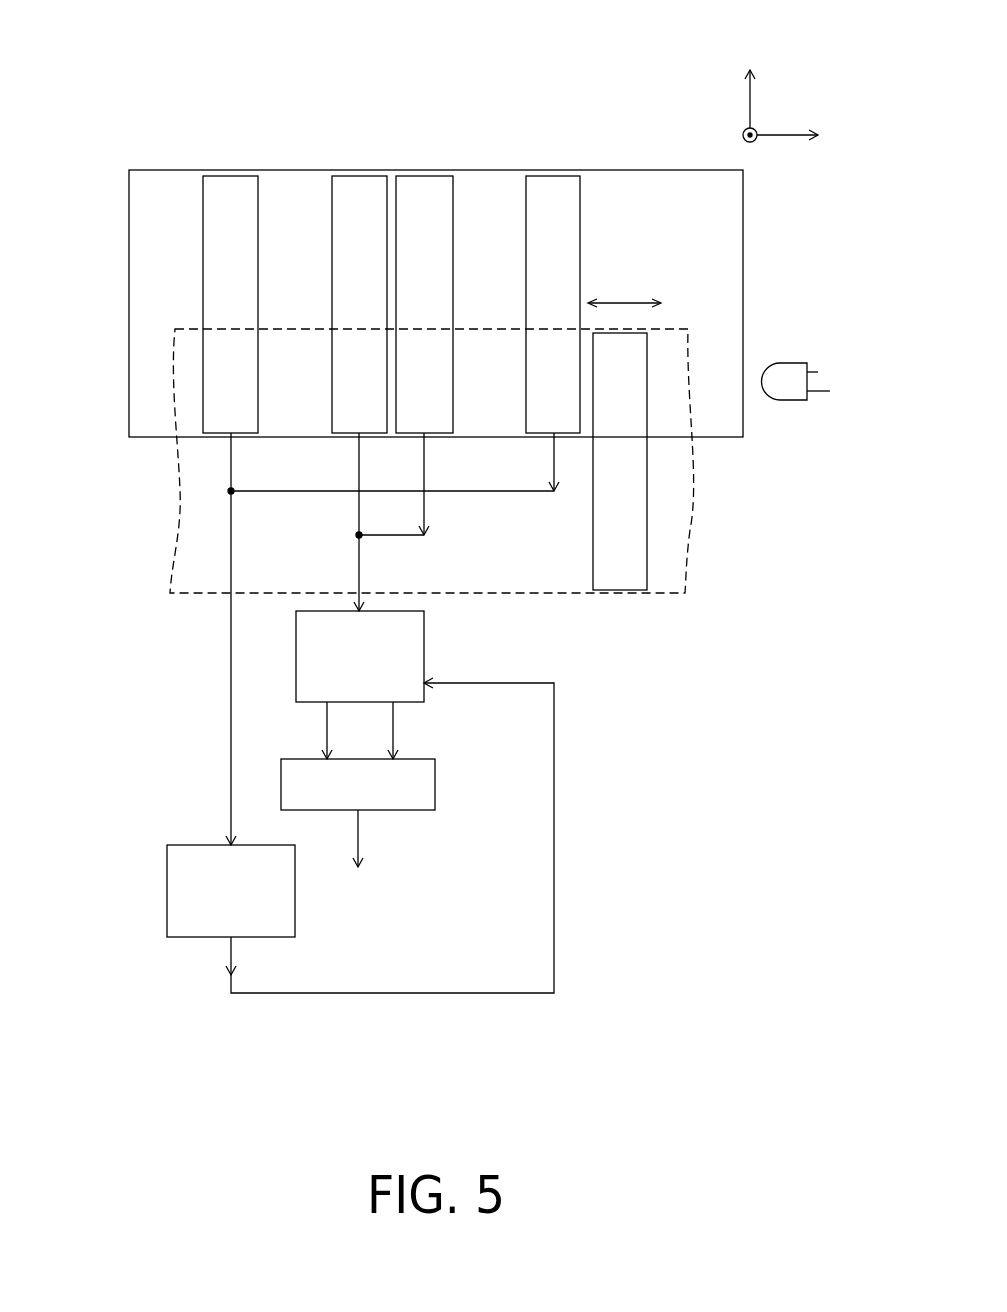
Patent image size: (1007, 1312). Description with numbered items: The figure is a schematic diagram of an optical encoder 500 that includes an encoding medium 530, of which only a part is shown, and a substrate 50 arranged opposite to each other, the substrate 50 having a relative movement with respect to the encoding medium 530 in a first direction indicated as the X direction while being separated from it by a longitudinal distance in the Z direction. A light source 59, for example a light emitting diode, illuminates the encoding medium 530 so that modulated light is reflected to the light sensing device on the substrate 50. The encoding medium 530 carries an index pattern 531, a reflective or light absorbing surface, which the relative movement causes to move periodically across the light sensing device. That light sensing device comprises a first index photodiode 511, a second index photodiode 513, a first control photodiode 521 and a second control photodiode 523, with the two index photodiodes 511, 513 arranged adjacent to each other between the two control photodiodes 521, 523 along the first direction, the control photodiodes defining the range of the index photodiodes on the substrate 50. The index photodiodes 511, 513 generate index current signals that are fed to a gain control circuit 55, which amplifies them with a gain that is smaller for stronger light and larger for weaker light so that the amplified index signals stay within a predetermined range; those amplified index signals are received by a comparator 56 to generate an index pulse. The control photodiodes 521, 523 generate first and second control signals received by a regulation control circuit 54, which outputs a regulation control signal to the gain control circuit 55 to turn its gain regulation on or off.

The optical encoder 500 is at (103, 35).
The substrate 50 is at (687, 172).
The first control photodiode 521 is at (225, 176).
The first index photodiode 511 is at (346, 176).
The second index photodiode 513 is at (418, 176).
The second control photodiode 523 is at (538, 176).
The encoding medium 530 is at (690, 538).
The index pattern 531 is at (615, 580).
The light source 59 is at (780, 368).
The gain control circuit 55 is at (424, 652).
The comparator 56 is at (435, 782).
The regulation control circuit 54 is at (167, 888).